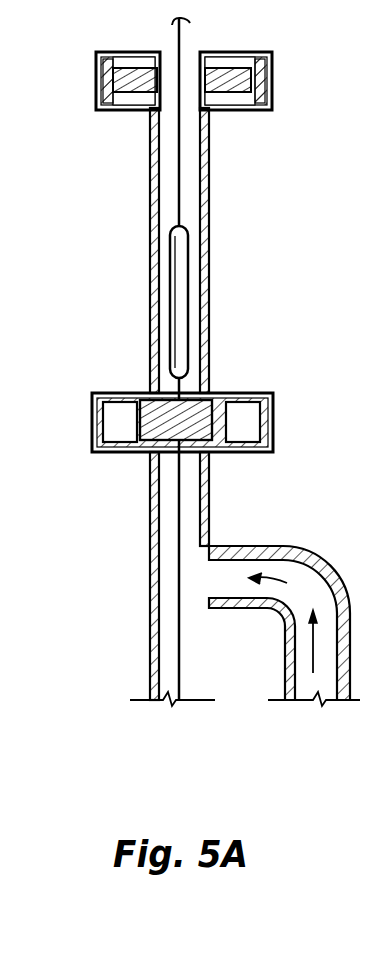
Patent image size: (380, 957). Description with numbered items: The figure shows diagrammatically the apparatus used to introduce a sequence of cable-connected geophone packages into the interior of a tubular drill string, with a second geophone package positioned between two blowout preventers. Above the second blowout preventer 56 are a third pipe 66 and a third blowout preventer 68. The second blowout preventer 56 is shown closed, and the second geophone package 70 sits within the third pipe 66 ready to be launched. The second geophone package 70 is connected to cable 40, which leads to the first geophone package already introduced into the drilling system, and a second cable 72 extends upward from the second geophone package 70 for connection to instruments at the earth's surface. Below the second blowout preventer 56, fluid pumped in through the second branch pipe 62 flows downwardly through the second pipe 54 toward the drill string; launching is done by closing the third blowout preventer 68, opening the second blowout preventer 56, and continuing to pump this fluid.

The third blowout preventer 68 is at (112, 110).
The second cable 72 is at (181, 161).
The third pipe 66 is at (150, 218).
The second geophone package 70 is at (181, 296).
The second blowout preventer 56 is at (115, 453).
The cable 40 is at (181, 488).
The second pipe 54 is at (150, 522).
The second branch pipe 62 is at (318, 563).